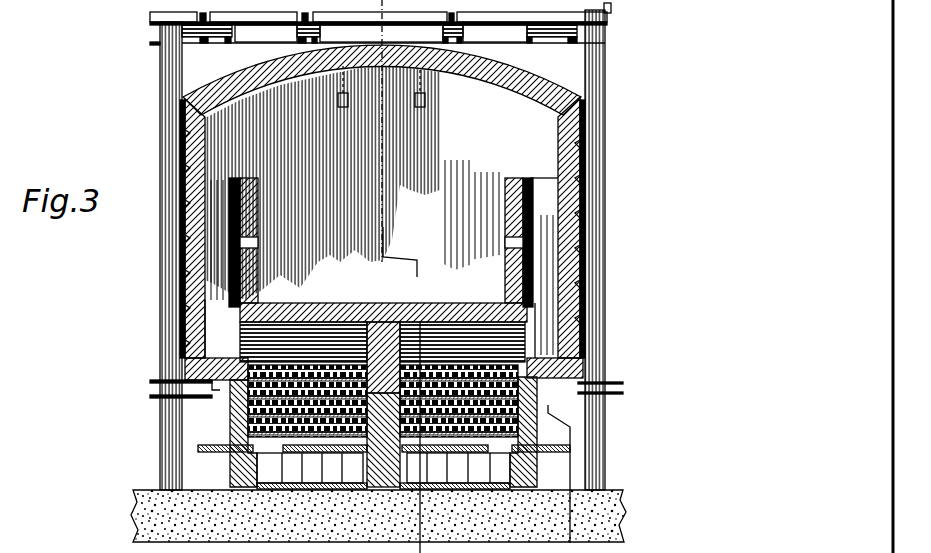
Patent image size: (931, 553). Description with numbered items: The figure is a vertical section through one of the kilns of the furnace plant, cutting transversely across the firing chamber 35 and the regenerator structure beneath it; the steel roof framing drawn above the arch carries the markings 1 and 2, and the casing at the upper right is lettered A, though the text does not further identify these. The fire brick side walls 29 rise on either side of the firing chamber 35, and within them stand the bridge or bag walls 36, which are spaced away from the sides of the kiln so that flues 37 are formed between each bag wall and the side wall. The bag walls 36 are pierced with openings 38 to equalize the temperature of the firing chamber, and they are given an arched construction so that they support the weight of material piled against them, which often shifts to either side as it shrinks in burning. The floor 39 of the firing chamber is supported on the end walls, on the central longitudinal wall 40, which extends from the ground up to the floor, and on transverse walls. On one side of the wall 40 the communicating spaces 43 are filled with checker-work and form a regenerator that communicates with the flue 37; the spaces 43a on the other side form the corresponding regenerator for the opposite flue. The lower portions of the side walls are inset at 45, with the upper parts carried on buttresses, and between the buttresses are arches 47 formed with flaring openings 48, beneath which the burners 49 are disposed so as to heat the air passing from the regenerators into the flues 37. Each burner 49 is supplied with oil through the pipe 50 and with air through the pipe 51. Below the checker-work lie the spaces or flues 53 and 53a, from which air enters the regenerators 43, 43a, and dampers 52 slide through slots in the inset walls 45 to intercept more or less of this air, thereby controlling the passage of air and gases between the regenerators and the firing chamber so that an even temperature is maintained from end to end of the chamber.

The top supporting structure 1 is at (542, 100).
The center line 2 is at (405, 8).
The furnace casing A is at (575, 72).
The side walls 29 is at (575, 133).
The firing chamber 35 is at (352, 183).
The bag walls 36 is at (259, 226).
The flue 37 is at (244, 200).
The openings 38 is at (258, 243).
The floor 39 is at (338, 318).
The central longitudinal wall 40 is at (392, 440).
The regenerator spaces 43 is at (288, 360).
The regenerator spaces 43a is at (488, 362).
The inset lower wall portion 45 is at (236, 450).
The arches 47 is at (192, 364).
The flaring openings 48 is at (380, 269).
The burner 49 is at (584, 366).
The oil pipe 50 is at (158, 397).
The air pipe 51 is at (160, 381).
The dampers 52 is at (560, 434).
The flue space 53 is at (310, 446).
The flue space 53a is at (465, 453).